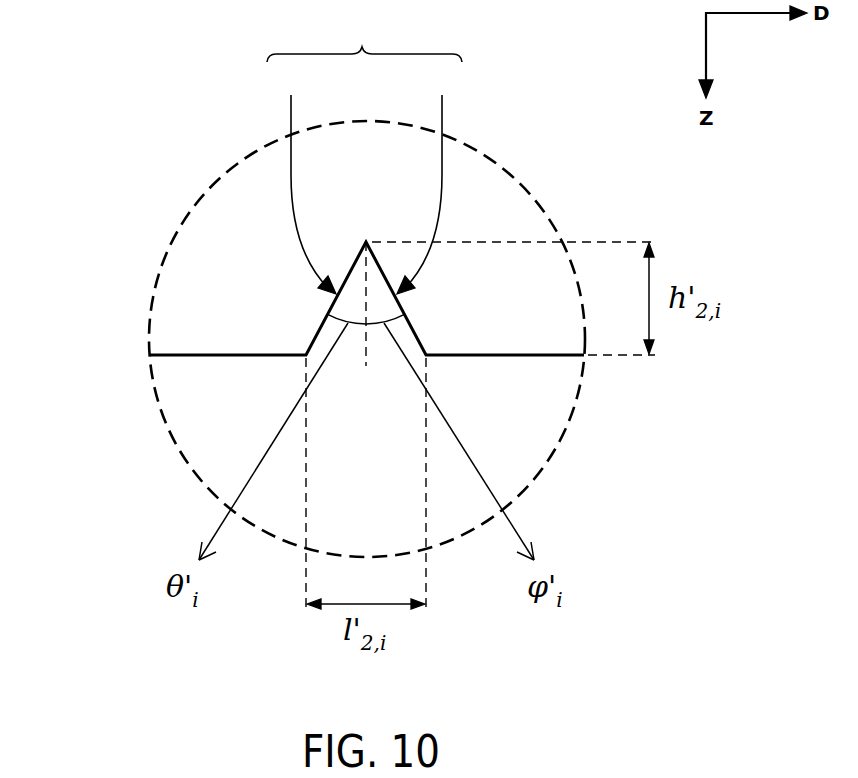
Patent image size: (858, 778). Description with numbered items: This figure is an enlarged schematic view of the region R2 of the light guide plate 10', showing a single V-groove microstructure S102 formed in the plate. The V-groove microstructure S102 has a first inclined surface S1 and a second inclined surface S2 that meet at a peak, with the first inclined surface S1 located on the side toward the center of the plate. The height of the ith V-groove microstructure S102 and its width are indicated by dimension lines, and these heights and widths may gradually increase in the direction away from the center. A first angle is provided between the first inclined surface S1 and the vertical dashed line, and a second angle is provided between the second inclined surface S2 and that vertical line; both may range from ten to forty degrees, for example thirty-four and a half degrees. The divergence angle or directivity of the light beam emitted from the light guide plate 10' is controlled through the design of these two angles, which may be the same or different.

The V-groove microstructure S102 is at (364, 39).
The first inclined surface S1 is at (305, 176).
The second inclined surface S2 is at (425, 176).
The region R2 is at (197, 208).
The light guide plate 10' is at (331, 297).